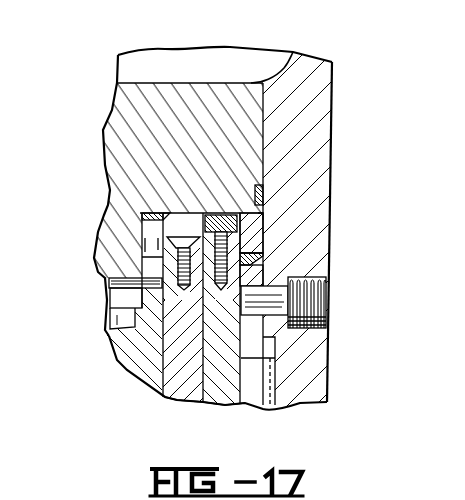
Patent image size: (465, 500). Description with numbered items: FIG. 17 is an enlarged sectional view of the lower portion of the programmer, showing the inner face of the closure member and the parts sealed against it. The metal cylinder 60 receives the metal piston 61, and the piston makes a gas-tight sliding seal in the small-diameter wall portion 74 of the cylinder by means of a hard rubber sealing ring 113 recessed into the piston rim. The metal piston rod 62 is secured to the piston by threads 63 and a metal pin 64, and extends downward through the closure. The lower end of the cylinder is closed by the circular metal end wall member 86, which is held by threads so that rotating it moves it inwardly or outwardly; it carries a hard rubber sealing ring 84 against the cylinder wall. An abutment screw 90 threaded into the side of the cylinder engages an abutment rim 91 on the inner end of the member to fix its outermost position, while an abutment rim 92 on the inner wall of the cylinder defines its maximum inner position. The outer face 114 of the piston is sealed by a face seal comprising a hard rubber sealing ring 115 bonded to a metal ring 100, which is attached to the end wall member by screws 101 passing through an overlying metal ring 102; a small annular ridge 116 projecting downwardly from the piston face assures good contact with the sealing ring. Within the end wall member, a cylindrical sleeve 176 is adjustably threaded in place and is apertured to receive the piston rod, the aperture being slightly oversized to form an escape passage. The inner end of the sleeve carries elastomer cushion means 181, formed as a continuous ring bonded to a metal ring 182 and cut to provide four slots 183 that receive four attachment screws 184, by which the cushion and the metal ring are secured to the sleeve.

The cylinder 60 is at (333, 85).
The piston 61 is at (104, 128).
The piston rod 62 is at (130, 370).
The threads 63 is at (108, 282).
The pin 64 is at (106, 292).
The wall portion of smaller diameter 74 is at (251, 83).
The sealing ring 84 is at (253, 255).
The end wall member 86 is at (218, 403).
The abutment screw 90 is at (326, 315).
The abutment rim 91 is at (251, 288).
The abutment rim 92 is at (268, 334).
The metal ring 100 is at (255, 243).
The screws 101 is at (218, 212).
The overlying metal ring 102 is at (238, 212).
The sealing ring 113 is at (257, 180).
The outer face of the piston 114 is at (141, 224).
The sealing ring 115 is at (263, 219).
The annular ridge 116 is at (263, 217).
The cylindrical sleeve 176 is at (180, 401).
The elastomer cushion means 181 is at (187, 223).
The metal ring 182 is at (141, 242).
The slots 183 is at (168, 213).
The attachment screws 184 is at (152, 213).